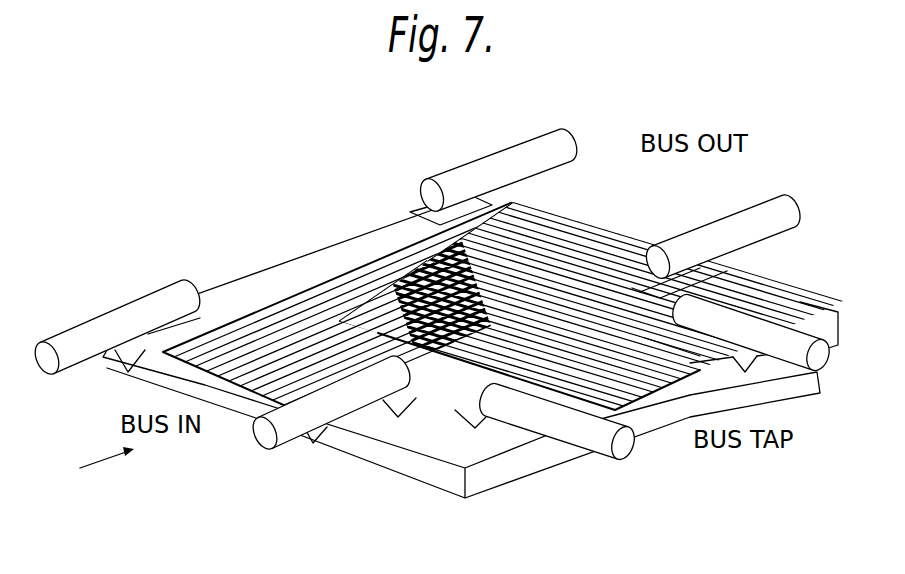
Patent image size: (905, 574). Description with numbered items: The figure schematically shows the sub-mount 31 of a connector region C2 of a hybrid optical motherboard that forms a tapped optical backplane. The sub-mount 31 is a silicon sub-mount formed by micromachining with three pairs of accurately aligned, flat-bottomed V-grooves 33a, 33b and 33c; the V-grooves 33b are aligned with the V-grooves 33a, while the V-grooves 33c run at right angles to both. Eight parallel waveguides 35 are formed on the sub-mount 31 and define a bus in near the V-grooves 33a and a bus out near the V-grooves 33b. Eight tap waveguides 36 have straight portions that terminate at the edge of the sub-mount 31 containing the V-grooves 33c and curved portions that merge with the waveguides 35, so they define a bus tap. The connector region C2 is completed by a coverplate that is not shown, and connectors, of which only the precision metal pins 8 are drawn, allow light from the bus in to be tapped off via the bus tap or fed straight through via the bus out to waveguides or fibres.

The precision metal pins 8 is at (72, 343).
The sub-mount 31 is at (440, 480).
The V-grooves 33a is at (153, 343).
The V-grooves 33b is at (468, 208).
The V-grooves 33c is at (753, 363).
The waveguides 35 is at (296, 308).
The tap waveguides 36 is at (670, 380).
The connector region C2 is at (365, 222).